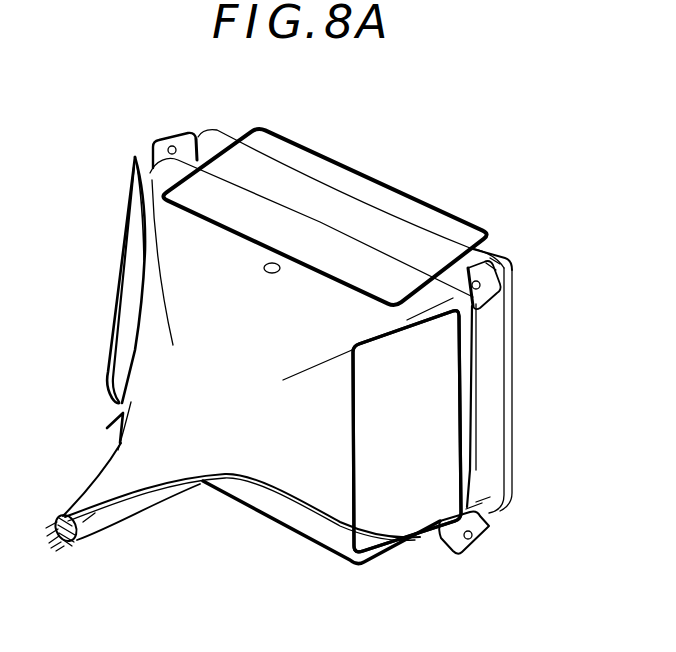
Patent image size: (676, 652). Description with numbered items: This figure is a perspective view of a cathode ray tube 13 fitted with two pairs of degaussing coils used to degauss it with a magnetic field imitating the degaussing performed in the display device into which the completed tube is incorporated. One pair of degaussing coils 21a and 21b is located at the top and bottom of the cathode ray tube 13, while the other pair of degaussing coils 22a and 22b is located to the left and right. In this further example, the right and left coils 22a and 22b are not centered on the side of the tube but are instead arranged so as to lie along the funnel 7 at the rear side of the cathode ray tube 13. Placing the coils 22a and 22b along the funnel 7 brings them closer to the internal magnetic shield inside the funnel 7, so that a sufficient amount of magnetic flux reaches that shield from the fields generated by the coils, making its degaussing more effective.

The cathode ray tube 13 is at (515, 256).
The degaussing coil 21a is at (396, 185).
The degaussing coil 21b is at (245, 505).
The degaussing coil 22a is at (121, 280).
The degaussing coil 22b is at (460, 443).
The funnel 7 is at (428, 480).